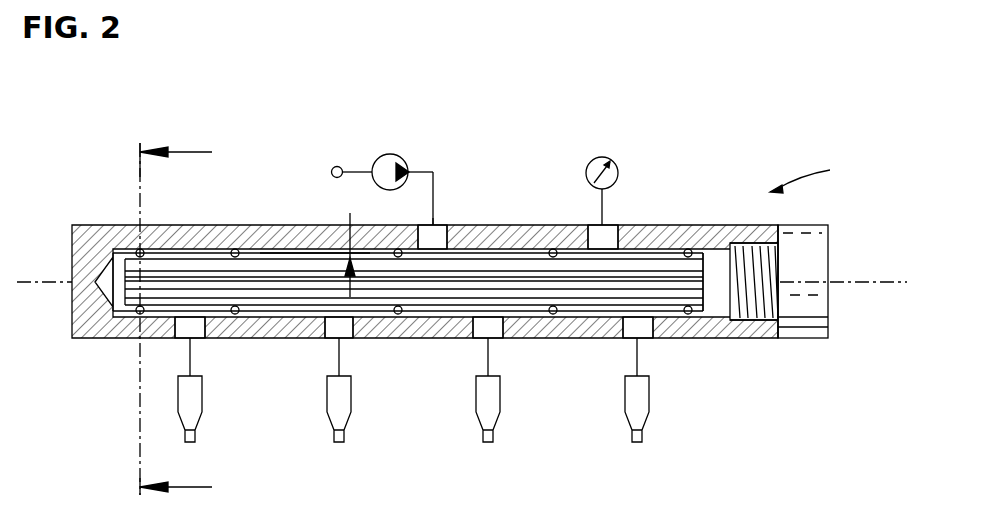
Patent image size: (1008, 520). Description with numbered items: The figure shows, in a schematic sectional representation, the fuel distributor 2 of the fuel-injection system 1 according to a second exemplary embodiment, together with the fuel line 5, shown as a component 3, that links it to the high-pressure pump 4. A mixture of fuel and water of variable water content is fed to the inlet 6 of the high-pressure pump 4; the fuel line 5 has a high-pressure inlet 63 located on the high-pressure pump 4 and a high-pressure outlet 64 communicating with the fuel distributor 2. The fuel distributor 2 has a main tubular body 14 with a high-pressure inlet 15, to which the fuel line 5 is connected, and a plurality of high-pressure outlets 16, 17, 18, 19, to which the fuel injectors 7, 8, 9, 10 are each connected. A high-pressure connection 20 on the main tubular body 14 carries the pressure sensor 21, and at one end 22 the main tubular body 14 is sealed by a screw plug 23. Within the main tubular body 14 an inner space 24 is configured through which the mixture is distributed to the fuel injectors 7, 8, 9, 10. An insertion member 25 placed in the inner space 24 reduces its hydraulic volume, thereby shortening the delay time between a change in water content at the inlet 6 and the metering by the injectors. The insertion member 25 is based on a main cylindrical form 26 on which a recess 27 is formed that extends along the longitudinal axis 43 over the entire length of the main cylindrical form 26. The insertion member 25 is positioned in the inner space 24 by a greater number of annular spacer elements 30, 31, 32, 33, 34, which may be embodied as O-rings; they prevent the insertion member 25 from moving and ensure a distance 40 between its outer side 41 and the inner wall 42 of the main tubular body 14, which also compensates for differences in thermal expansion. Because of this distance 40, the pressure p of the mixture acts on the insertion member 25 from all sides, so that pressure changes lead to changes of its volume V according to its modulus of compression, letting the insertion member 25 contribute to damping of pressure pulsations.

The fuel-injection system 1 is at (96, 128).
The fuel distributor 2 is at (819, 169).
The component 3 is at (775, 190).
The high-pressure pump 4 is at (385, 155).
The fuel line 5 is at (434, 185).
The inlet 6 is at (337, 166).
The fuel injector 7 is at (192, 393).
The fuel injector 8 is at (341, 393).
The fuel injector 9 is at (490, 393).
The fuel injector 10 is at (639, 394).
The main tubular body 14 is at (244, 248).
The high-pressure inlet 15 is at (440, 236).
The high-pressure outlet 16 is at (196, 328).
The high-pressure outlet 17 is at (345, 328).
The high-pressure outlet 18 is at (493, 328).
The high-pressure outlet 19 is at (645, 332).
The high-pressure connection 20 is at (616, 224).
The pressure sensor 21 is at (602, 157).
The end 22 is at (762, 330).
The screw plug 23 is at (805, 257).
The inner space 24 is at (715, 263).
The insertion member 25 is at (208, 270).
The main cylindrical form 26 is at (518, 262).
The recess 27 is at (137, 280).
The spacer element 30 is at (136, 318).
The spacer element 31 is at (691, 314).
The spacer element 32 is at (240, 314).
The spacer element 33 is at (401, 314).
The spacer element 34 is at (556, 314).
The distance 40 is at (345, 252).
The outer side 41 is at (290, 253).
The inner wall 42 is at (317, 257).
The longitudinal axis 43 is at (25, 280).
The high-pressure inlet 63 is at (421, 170).
The high-pressure outlet 64 is at (436, 222).
The pressure p is at (718, 282).
The volume V is at (597, 300).